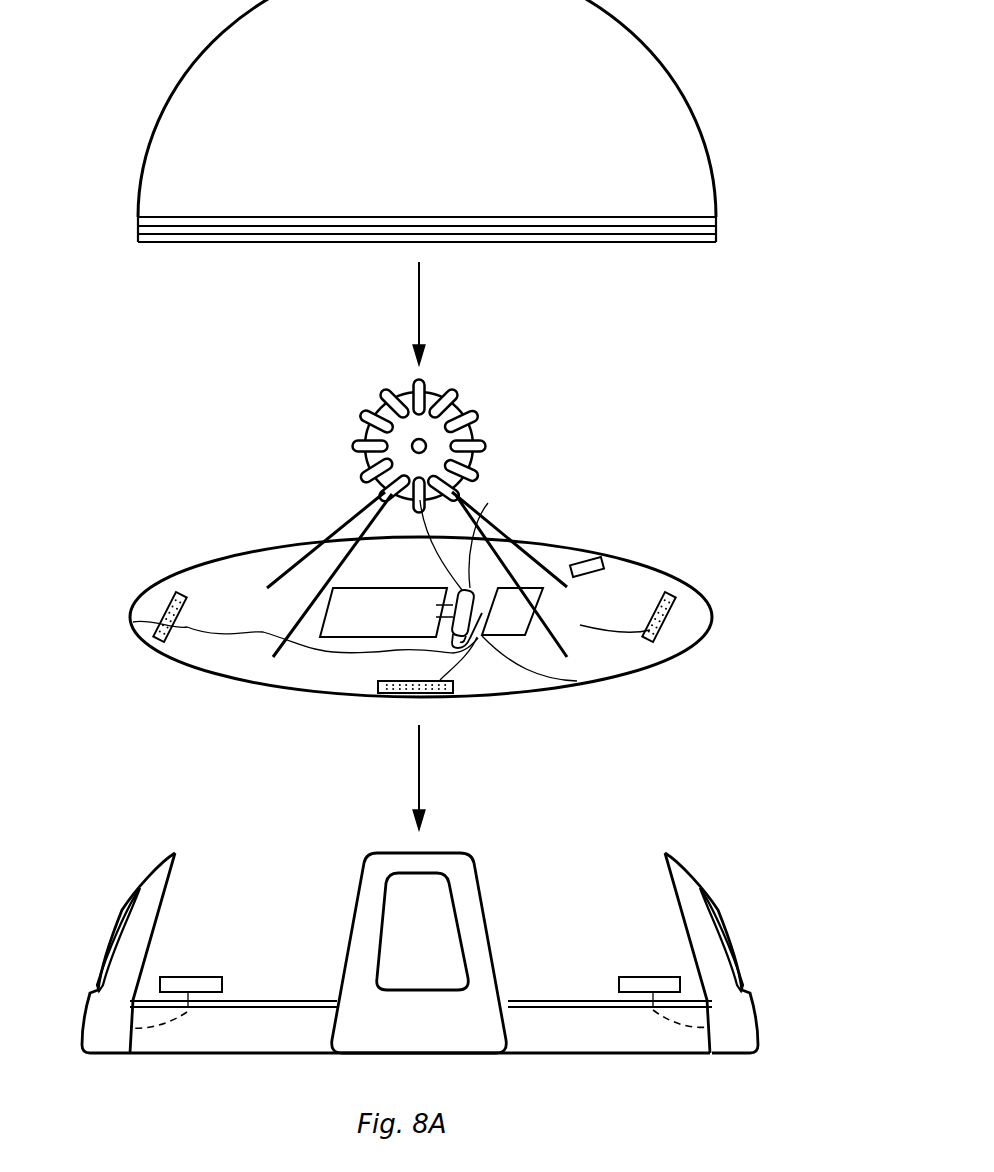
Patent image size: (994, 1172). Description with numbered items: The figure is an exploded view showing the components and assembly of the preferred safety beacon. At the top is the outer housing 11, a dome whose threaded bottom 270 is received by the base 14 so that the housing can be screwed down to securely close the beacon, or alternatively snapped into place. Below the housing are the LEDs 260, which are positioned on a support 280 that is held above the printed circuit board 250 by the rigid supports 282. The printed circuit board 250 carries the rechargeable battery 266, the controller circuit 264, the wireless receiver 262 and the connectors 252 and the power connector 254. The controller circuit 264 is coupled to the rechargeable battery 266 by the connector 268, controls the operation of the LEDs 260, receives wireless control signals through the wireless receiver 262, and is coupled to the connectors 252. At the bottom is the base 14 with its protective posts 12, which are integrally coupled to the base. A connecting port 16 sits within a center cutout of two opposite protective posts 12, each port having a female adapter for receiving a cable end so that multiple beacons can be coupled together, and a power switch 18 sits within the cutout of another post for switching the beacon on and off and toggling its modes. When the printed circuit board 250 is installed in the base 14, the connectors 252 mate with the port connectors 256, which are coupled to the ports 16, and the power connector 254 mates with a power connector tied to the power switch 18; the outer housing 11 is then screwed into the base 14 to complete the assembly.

The outer housing 11 is at (650, 43).
The threaded bottom 270 is at (716, 230).
The LEDs 260 is at (452, 397).
The support 280 is at (378, 397).
The rigid supports 282 is at (333, 525).
The connector 268 is at (488, 503).
The printed circuit board 250 is at (712, 622).
The connectors 252 is at (133, 624).
The wireless receiver 262 is at (594, 556).
The controller circuit 264 is at (577, 681).
The rechargeable battery 266 is at (347, 640).
The power connector 254 is at (453, 688).
The port connectors 256 is at (191, 977).
The protective posts 12 is at (150, 868).
The connecting port 16 is at (110, 937).
The power switch 18 is at (447, 958).
The base 14 is at (653, 1055).